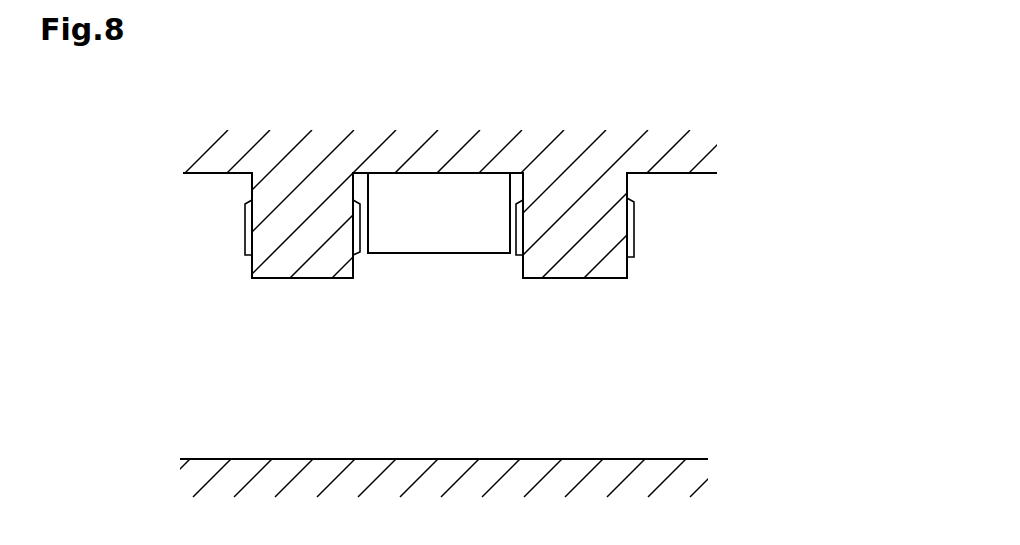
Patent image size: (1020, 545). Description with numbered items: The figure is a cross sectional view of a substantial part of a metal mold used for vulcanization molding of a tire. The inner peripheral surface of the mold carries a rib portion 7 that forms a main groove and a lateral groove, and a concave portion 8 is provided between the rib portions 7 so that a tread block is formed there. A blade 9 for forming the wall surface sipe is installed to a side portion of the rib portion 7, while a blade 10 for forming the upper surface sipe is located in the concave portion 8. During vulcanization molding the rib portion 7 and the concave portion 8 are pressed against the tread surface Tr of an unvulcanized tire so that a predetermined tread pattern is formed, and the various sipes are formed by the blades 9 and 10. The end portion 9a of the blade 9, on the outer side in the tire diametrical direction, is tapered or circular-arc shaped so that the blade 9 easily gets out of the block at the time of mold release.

The rib portion 7 is at (295, 279).
The concave portion 8 is at (445, 188).
The blade 9 is at (357, 256).
The end portion 9a is at (358, 215).
The blade 10 is at (432, 243).
The tread surface Tr is at (271, 459).